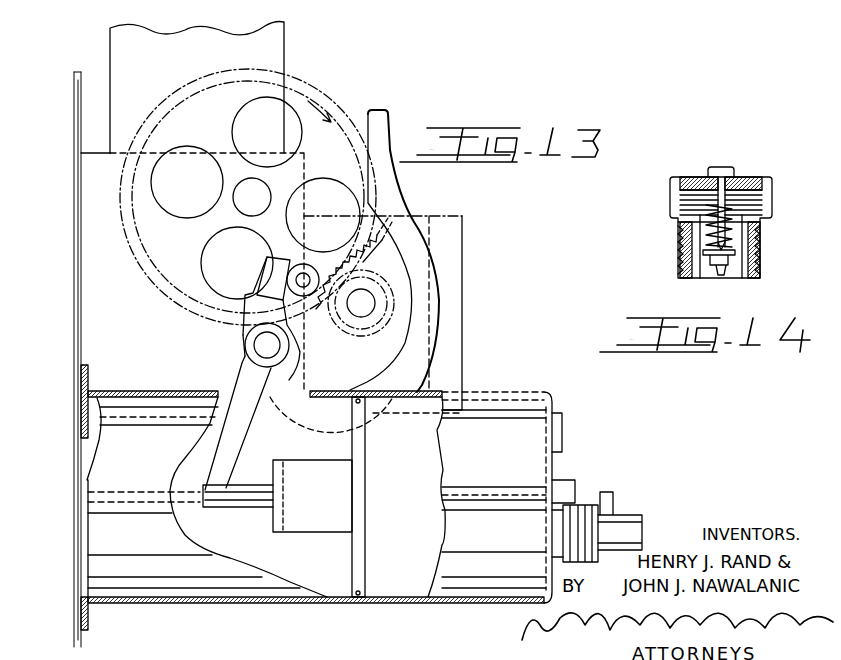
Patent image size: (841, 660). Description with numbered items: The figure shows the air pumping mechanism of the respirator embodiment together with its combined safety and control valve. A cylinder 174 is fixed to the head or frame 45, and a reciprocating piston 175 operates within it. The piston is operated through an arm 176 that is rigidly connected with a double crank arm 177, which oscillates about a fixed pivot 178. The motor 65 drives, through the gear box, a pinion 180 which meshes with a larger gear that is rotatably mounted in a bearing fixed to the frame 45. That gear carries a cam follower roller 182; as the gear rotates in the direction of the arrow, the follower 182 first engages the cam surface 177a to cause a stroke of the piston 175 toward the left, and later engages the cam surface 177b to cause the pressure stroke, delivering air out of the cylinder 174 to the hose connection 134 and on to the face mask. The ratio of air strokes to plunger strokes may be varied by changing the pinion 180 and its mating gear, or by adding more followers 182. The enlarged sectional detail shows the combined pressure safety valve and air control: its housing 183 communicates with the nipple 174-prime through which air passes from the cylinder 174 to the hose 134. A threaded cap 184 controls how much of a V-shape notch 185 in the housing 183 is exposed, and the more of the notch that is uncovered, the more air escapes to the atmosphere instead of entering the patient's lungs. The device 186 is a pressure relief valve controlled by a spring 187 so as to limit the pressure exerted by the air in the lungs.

In FIG. 13, the head 45 is at (97, 323).
In FIG. 13, the motor 65 is at (257, 43).
In FIG. 13, the cam surface 177a is at (367, 165).
In FIG. 13, the cam follower roller 182 is at (305, 268).
In FIG. 13, the pinion 180 is at (367, 270).
In FIG. 13, the double crank arm 177 is at (393, 358).
In FIG. 13, the cam surface 177b is at (257, 290).
In FIG. 13, the fixed pivot 178 is at (267, 345).
In FIG. 13, the arm 176 is at (245, 386).
In FIG. 13, the cylinder 174 is at (508, 391).
In FIG. 13, the piston 175 is at (365, 537).
In FIG. 13, the nipple 174-prime is at (612, 517).
In FIG. 13, the hose connection 134 is at (625, 528).
In FIG. 14, the threaded cap 184 is at (680, 190).
In FIG. 14, the housing 183 is at (678, 254).
In FIG. 14, the pressure relief valve 186 is at (700, 170).
In FIG. 14, the V-shape notch 185 is at (733, 210).
In FIG. 14, the spring 187 is at (738, 238).